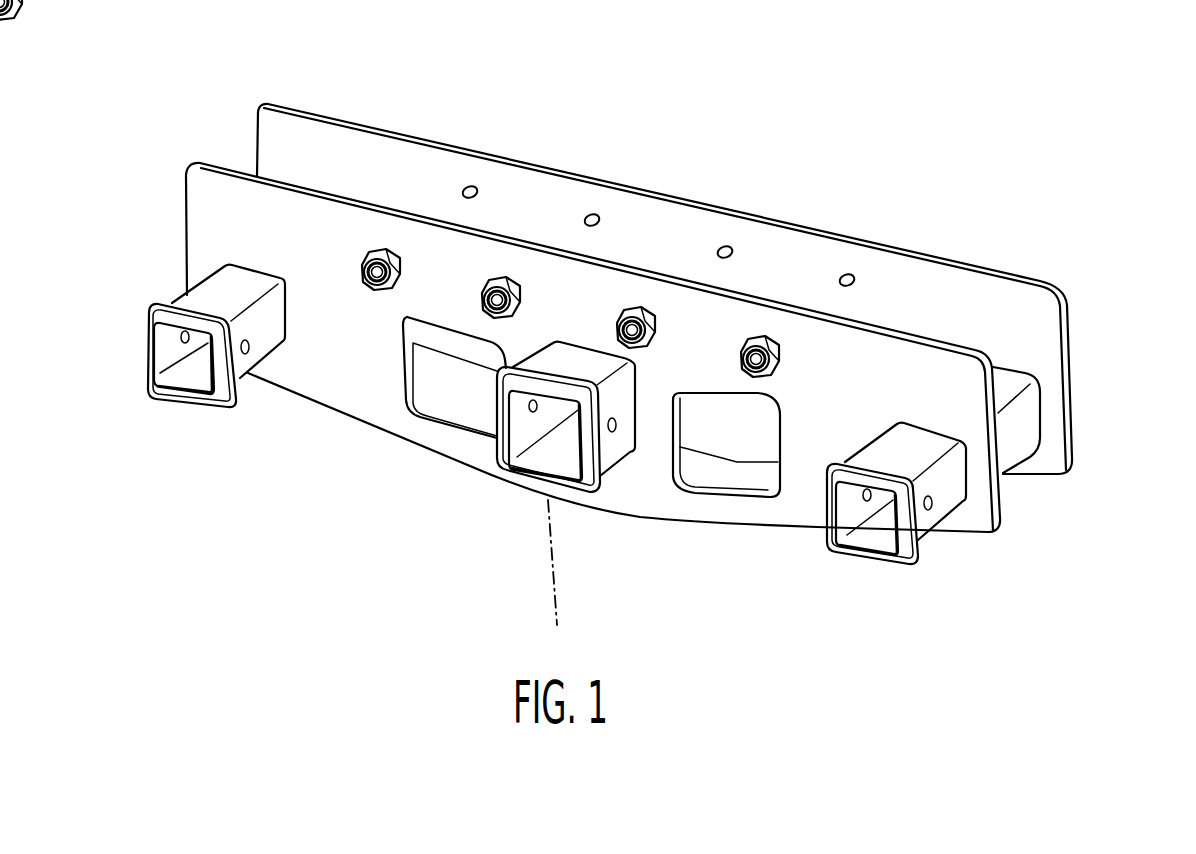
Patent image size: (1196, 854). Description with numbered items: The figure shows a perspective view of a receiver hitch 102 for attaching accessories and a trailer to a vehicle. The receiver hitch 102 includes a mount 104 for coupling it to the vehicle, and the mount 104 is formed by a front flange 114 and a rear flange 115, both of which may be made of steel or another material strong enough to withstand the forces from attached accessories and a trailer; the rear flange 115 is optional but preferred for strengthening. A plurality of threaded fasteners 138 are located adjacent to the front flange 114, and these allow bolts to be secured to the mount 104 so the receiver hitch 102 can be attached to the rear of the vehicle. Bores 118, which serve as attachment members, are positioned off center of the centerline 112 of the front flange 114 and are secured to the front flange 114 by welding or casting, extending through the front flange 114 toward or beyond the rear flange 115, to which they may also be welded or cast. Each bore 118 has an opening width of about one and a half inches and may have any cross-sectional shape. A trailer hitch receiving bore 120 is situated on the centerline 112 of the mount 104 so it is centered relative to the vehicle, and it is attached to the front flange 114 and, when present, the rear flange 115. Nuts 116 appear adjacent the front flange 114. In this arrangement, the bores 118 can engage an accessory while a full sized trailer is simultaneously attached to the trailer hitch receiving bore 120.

The receiver hitch 102 is at (1010, 112).
The mount 104 is at (1077, 284).
The centerline 112 is at (552, 577).
The front flange 114 is at (1002, 513).
The rear flange 115 is at (1070, 437).
The nut 116 is at (379, 252).
The bore 118 is at (1030, 417).
The trailer hitch receiving bore 120 is at (617, 461).
The threaded fasteners 138 is at (470, 186).